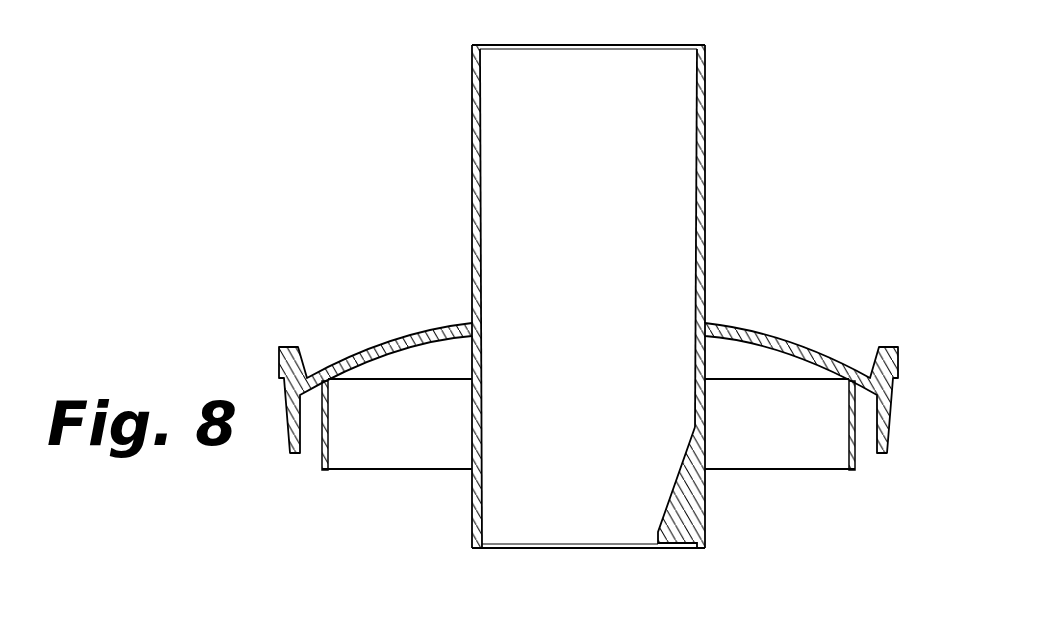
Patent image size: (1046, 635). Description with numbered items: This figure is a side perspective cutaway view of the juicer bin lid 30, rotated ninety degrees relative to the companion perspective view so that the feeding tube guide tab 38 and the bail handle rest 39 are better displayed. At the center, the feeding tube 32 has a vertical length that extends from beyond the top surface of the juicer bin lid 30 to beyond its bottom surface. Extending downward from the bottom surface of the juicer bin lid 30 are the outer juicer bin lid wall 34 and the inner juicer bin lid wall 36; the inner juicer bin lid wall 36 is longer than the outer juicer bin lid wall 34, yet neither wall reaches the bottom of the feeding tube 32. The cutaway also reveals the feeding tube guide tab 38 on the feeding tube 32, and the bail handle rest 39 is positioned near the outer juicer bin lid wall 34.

The juicer bin lid 30 is at (438, 283).
The feeding tube 32 is at (705, 127).
The outer juicer bin lid wall 34 is at (291, 454).
The inner juicer bin lid wall 36 is at (853, 468).
The feeding tube guide tab 38 is at (675, 488).
The bail handle rest 39 is at (280, 345).